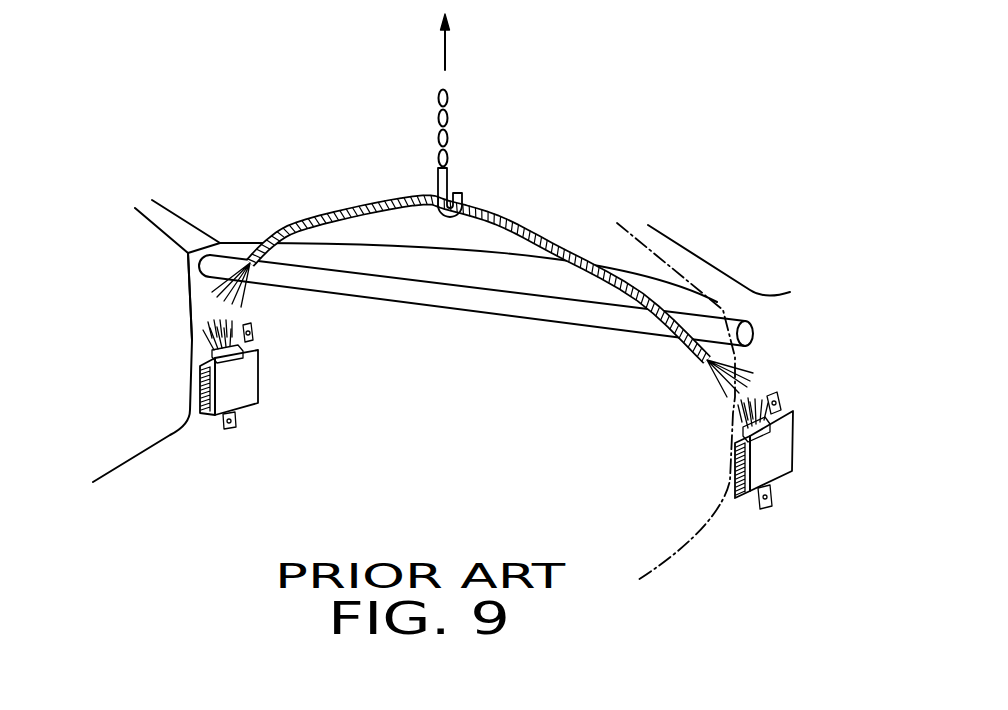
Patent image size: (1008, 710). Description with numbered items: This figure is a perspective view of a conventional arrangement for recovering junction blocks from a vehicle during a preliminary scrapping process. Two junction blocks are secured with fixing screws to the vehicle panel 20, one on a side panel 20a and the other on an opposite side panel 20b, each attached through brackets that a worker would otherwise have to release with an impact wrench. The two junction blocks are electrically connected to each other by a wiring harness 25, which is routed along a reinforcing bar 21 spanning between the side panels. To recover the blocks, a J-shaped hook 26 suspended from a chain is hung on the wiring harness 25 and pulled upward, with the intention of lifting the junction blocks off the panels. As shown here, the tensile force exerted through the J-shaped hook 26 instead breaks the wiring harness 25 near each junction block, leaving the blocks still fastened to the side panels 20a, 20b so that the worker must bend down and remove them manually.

The vehicle panel 20 is at (145, 447).
The side panel 20a is at (205, 303).
The side panel 20b is at (742, 402).
The reinforcing bar 21 is at (468, 295).
The wiring harness 25 is at (530, 228).
The J-shaped hook 26 is at (433, 190).